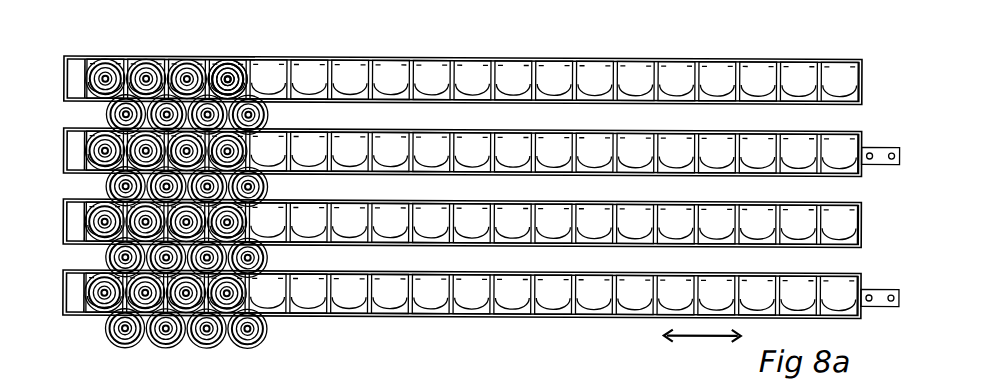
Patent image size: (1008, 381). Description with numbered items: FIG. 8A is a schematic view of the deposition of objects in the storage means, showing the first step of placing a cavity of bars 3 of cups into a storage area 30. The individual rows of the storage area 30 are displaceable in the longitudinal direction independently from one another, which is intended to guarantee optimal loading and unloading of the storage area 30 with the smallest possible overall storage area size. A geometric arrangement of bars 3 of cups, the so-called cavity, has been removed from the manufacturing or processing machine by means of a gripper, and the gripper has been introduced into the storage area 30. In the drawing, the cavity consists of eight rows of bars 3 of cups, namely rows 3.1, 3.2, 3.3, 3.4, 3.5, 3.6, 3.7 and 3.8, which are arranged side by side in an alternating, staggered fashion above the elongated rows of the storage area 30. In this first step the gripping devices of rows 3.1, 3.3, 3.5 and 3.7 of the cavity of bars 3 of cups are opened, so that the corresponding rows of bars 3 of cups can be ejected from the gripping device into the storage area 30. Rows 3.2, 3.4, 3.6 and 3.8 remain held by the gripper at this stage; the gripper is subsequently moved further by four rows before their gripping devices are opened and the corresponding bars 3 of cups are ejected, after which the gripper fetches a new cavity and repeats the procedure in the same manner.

The bar of cups 3 is at (226, 73).
The row of the cavity of bars of cups 3.1 is at (263, 82).
The row of the cavity of bars of cups 3.2 is at (154, 114).
The row of the cavity of bars of cups 3.3 is at (260, 155).
The row of the cavity of bars of cups 3.4 is at (153, 186).
The row of the cavity of bars of cups 3.5 is at (258, 230).
The row of the cavity of bars of cups 3.6 is at (153, 257).
The row of the cavity of bars of cups 3.7 is at (265, 298).
The row of the cavity of bars of cups 3.8 is at (153, 328).
The storage area 30 is at (470, 199).